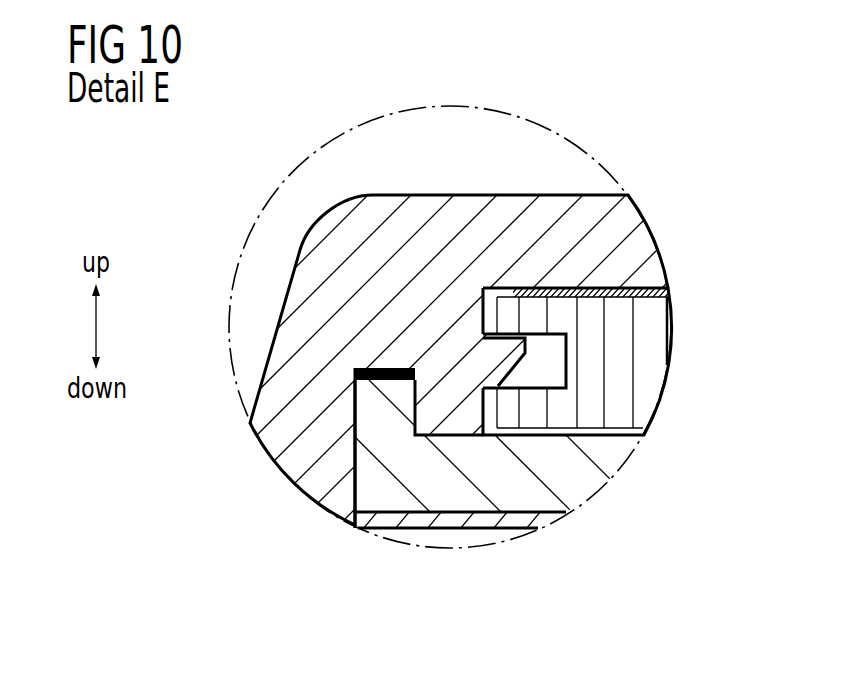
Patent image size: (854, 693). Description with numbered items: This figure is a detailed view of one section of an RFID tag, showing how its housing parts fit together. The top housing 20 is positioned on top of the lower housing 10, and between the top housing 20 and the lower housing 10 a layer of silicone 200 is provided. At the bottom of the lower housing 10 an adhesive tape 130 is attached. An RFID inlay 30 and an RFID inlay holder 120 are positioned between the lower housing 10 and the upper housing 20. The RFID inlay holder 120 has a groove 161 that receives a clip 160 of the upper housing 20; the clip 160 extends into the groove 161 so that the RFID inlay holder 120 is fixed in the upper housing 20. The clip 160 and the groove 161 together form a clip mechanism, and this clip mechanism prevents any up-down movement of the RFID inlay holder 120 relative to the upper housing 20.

The lower housing 10 is at (520, 480).
The top housing 20 is at (335, 253).
The RFID inlay 30 is at (643, 289).
The RFID inlay holder 120 is at (643, 383).
The adhesive tape 130 is at (418, 513).
The clip 160 is at (494, 350).
The groove 161 is at (543, 358).
The silicone 200 is at (353, 372).